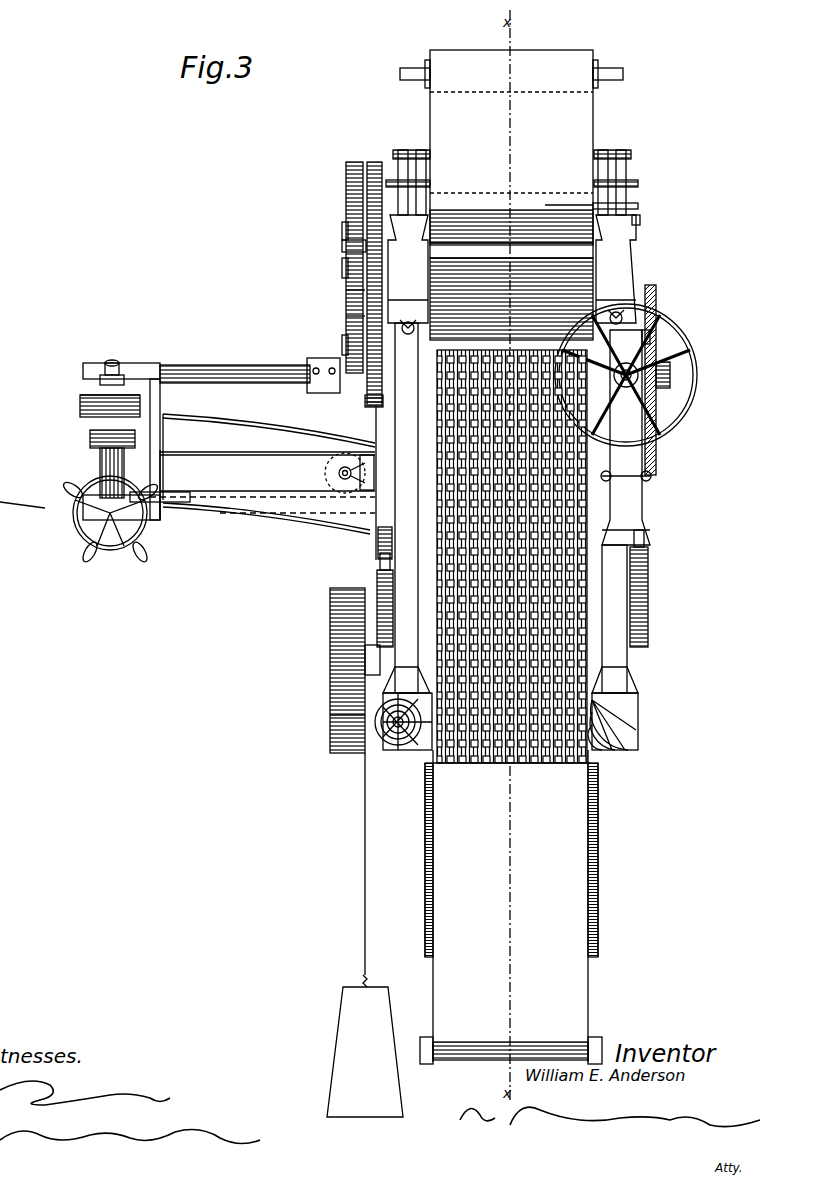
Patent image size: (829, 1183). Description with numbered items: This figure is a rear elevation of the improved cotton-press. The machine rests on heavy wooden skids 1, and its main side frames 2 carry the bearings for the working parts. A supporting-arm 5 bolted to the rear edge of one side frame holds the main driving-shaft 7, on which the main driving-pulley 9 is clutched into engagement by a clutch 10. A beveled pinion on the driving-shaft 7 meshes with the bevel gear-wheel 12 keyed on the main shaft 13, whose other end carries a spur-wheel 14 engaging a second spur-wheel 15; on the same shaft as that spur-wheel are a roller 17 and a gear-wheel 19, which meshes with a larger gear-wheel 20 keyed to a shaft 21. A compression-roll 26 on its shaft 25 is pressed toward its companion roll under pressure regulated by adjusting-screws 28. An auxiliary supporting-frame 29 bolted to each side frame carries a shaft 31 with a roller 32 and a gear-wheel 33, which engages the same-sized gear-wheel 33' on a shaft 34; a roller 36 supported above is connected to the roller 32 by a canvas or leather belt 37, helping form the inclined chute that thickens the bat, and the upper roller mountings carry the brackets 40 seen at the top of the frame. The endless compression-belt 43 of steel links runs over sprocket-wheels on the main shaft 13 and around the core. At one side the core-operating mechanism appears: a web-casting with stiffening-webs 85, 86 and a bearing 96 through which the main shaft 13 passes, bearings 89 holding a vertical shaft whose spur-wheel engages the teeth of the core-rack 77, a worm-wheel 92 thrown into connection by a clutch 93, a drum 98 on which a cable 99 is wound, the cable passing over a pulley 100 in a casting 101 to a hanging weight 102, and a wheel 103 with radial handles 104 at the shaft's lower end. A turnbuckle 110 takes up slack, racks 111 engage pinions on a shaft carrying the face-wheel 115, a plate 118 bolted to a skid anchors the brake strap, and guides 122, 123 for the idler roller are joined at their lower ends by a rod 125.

The skid 1 is at (383, 750).
The main side frame 2 is at (510, 508).
The supporting-arm 5 is at (642, 480).
The main driving-shaft 7 is at (640, 378).
The main driving-pulley 9 is at (697, 372).
The clutch 10 is at (650, 338).
The bevel gear-wheel 12 is at (656, 420).
The main shaft 13 is at (250, 369).
The spur-wheel 14 is at (366, 398).
The spur-wheel 15 is at (346, 345).
The roller 17 is at (511, 292).
The gear-wheel 19 is at (346, 318).
The gear-wheel 20 is at (342, 235).
The shaft 21 is at (342, 246).
The shaft 25 is at (346, 290).
The compression-roll 26 is at (342, 268).
The adjusting-screw 28 is at (692, 296).
The auxiliary supporting-frame 29 is at (660, 265).
The shaft 31 is at (638, 208).
The roller 32 is at (640, 222).
The gear-wheel 33 is at (340, 267).
The gear-wheel 33' is at (361, 262).
The shaft 34 is at (405, 178).
The roller 36 is at (605, 62).
The belt 37 is at (511, 147).
The bracket 40 is at (425, 150).
The endless compression-belt 43 is at (511, 566).
The core-rack 77 is at (220, 512).
The stiffening-web 85 is at (269, 449).
The stiffening-web 86 is at (262, 503).
The bearing 89 is at (160, 477).
The worm-wheel 92 is at (80, 408).
The clutch 93 is at (100, 372).
The bearing 96 is at (121, 431).
The drum 98 is at (90, 440).
The cable 99 is at (267, 463).
The pulley 100 is at (325, 473).
The casting 101 is at (360, 460).
The weight 102 is at (352, 1050).
The wheel 103 is at (150, 520).
The radial handle 104 is at (105, 560).
The turnbuckle 110 is at (378, 545).
The rack 111 is at (377, 580).
The face-wheel 115 is at (330, 625).
The plate 118 is at (330, 715).
The guide 122 is at (433, 820).
The guide 123 is at (598, 885).
The rod 125 is at (450, 1037).